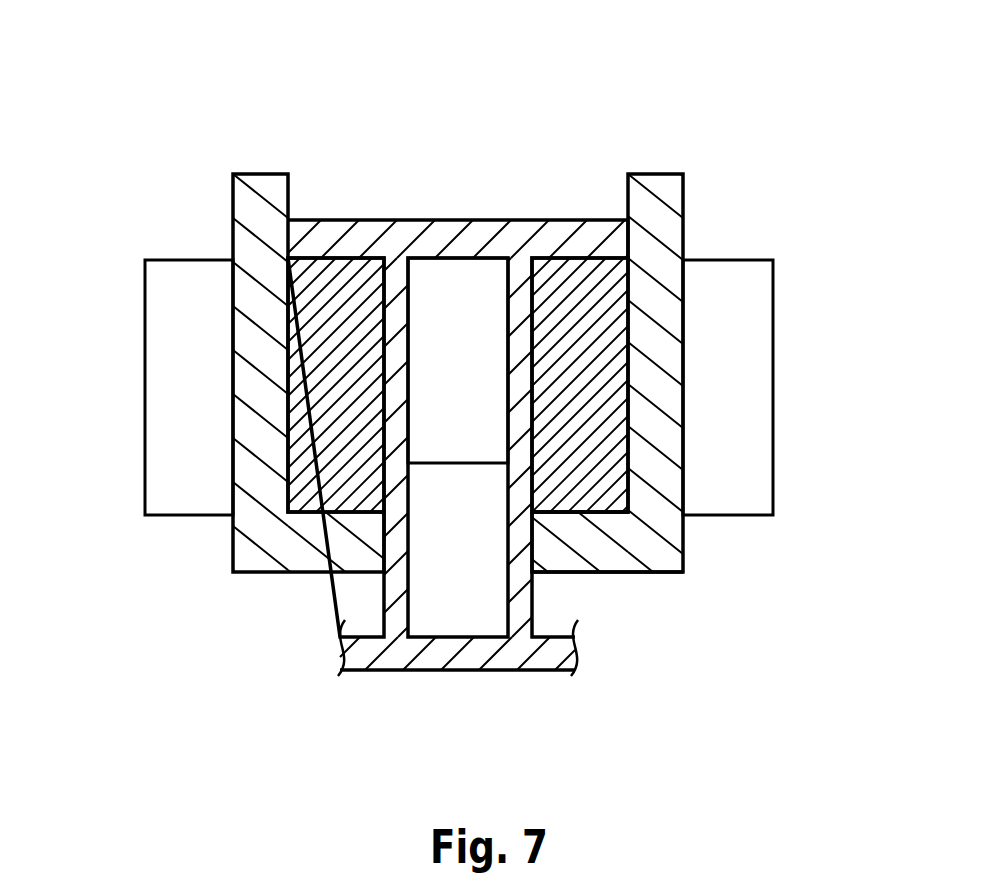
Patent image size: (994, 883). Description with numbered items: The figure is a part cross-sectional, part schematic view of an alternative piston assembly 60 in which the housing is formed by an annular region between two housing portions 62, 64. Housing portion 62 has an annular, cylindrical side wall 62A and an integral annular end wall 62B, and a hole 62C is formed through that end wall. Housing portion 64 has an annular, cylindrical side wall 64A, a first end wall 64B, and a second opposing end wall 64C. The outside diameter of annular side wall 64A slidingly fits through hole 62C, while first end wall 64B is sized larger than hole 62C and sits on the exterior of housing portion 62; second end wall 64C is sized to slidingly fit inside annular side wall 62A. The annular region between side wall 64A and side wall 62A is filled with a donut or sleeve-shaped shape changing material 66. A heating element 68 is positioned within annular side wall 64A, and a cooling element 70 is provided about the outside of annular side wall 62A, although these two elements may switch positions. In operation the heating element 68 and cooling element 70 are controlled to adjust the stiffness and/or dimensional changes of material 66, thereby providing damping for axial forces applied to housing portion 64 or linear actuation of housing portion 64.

The piston assembly 60 is at (737, 95).
The housing portion 62 is at (233, 185).
The annular side wall 62A is at (252, 220).
The annular end wall 62B is at (233, 572).
The hole 62C is at (540, 573).
The housing portion 64 is at (382, 588).
The annular side wall 64A is at (522, 590).
The first end wall 64B is at (435, 660).
The second end wall 64C is at (485, 230).
The shape changing material 66 is at (290, 514).
The heating element 68 is at (638, 548).
The cooling element 70 is at (145, 390).